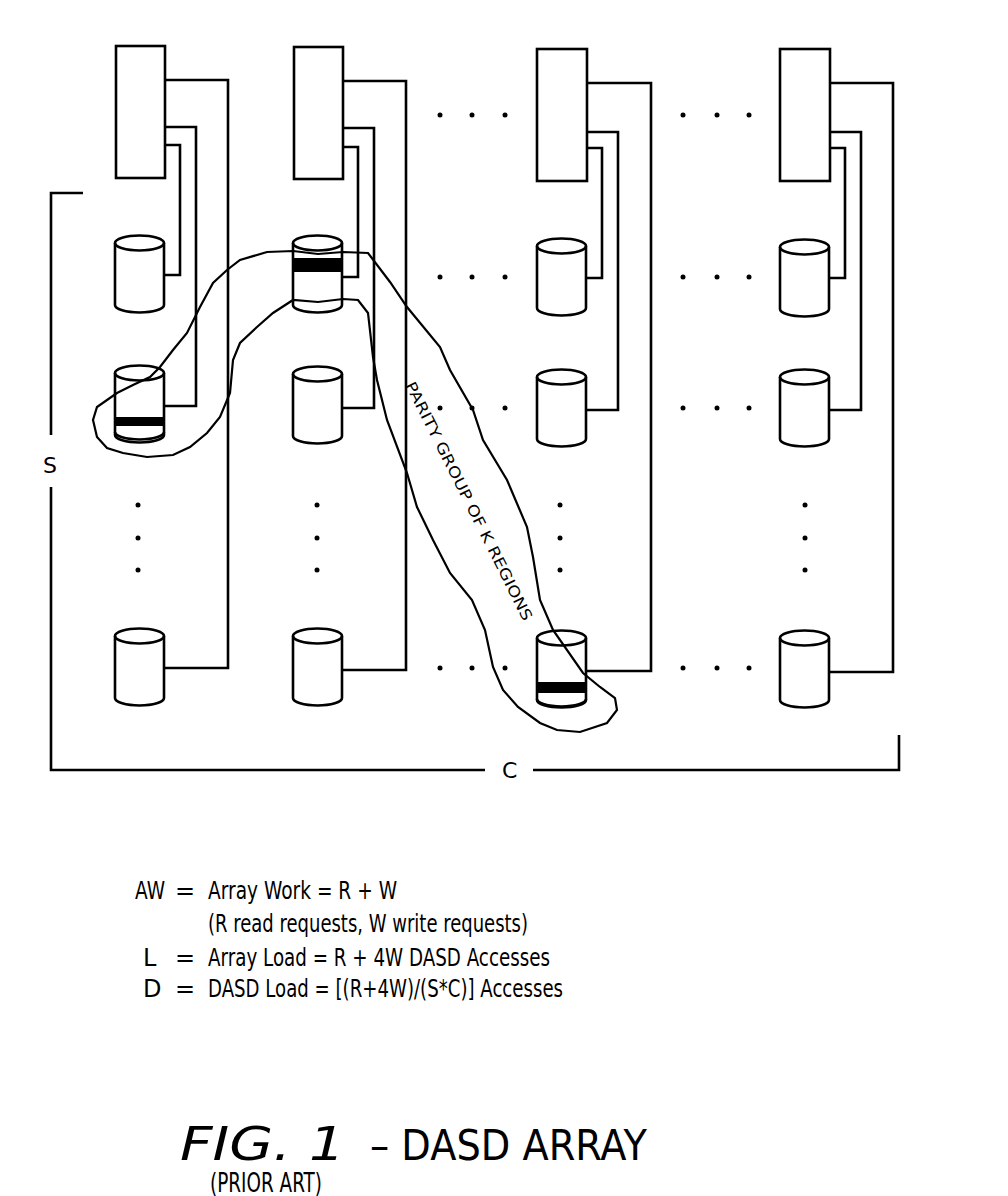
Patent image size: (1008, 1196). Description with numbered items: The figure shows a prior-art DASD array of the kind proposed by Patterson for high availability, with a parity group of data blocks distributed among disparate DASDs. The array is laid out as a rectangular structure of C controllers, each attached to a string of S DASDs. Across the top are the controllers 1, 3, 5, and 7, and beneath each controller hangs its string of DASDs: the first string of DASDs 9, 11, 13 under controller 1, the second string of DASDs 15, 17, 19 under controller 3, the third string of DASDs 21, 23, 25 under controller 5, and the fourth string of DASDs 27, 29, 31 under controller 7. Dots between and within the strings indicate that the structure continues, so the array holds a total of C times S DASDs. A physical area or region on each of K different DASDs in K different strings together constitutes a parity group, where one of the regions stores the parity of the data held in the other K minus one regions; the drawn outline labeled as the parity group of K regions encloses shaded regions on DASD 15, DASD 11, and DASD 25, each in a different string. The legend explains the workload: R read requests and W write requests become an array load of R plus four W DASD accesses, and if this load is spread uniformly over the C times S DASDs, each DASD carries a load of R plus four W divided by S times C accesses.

The controller 1 is at (142, 45).
The controller 3 is at (319, 45).
The controller 5 is at (563, 48).
The controller 7 is at (806, 48).
The DASD 9 is at (142, 236).
The DASD 11 is at (141, 366).
The DASD 13 is at (138, 627).
The DASD 15 is at (321, 238).
The DASD 17 is at (320, 367).
The DASD 19 is at (316, 627).
The DASD 21 is at (564, 240).
The DASD 23 is at (564, 372).
The DASD 25 is at (561, 628).
The DASD 27 is at (806, 241).
The DASD 29 is at (806, 372).
The DASD 31 is at (805, 629).